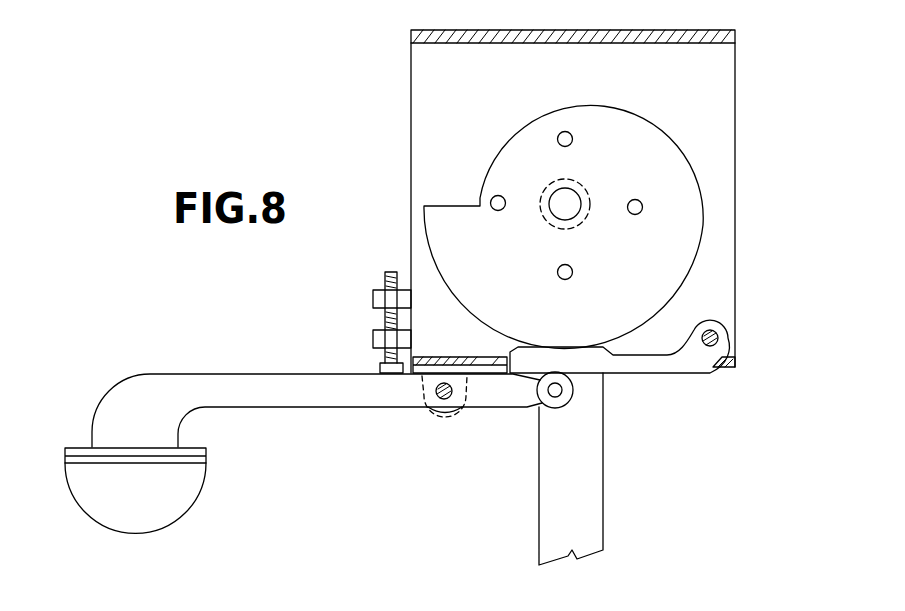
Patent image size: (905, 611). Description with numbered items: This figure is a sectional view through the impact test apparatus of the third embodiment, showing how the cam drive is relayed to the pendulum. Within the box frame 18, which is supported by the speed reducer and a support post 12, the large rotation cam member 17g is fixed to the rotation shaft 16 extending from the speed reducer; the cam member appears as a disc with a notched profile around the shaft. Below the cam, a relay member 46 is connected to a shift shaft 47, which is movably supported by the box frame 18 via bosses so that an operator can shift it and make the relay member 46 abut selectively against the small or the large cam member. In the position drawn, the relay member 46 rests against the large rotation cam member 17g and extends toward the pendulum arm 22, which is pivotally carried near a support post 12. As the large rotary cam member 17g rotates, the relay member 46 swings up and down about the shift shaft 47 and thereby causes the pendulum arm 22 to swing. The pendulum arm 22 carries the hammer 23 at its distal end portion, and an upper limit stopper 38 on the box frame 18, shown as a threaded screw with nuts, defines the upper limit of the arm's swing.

The support post 12 is at (603, 503).
The rotation shaft 16 is at (563, 201).
The large rotation cam member 17g is at (678, 243).
The box frame 18 is at (735, 127).
The pendulum arm 22 is at (150, 408).
The hammer 23 is at (173, 492).
The upper limit stopper 38 is at (372, 358).
The relay member 46 is at (636, 366).
The shift shaft 47 is at (718, 338).